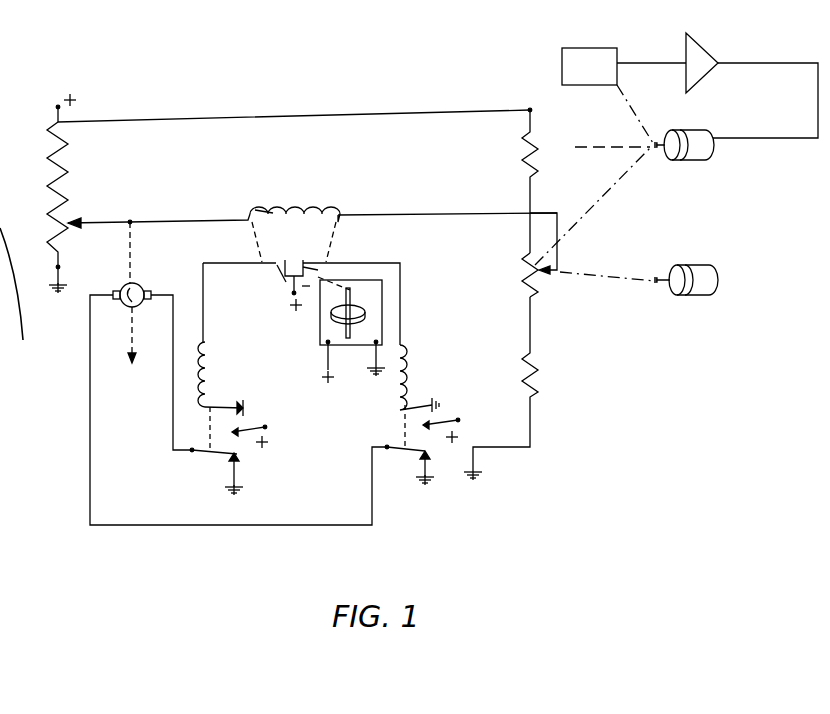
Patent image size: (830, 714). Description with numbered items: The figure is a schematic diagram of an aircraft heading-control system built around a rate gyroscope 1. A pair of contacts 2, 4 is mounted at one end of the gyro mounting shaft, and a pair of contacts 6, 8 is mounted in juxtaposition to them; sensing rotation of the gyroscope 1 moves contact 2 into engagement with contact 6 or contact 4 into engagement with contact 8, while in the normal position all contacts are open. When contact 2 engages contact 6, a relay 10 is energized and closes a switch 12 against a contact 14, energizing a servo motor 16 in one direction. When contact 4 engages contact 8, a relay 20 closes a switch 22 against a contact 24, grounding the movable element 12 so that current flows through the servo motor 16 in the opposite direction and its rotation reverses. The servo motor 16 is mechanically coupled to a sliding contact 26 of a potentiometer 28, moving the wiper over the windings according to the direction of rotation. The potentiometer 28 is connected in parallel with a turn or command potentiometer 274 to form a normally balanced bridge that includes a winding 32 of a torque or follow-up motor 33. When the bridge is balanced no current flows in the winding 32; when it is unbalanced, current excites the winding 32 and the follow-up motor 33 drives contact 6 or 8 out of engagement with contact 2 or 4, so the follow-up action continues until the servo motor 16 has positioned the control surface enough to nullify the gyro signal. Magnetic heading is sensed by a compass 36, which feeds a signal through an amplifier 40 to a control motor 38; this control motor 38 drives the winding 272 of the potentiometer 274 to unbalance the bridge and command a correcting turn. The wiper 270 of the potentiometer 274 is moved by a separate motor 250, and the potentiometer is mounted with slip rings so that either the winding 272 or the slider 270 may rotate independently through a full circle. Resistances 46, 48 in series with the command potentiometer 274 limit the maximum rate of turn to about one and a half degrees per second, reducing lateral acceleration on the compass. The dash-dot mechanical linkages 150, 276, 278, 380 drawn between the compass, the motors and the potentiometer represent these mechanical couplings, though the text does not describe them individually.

The rate gyroscope 1 is at (340, 315).
The contact 2 is at (279, 279).
The contact 4 is at (318, 269).
The contact 6 is at (276, 260).
The contact 8 is at (318, 260).
The relay 10 is at (212, 370).
The switch 12 is at (212, 458).
The contact 14 is at (242, 432).
The servo motor 16 is at (133, 305).
The relay 20 is at (406, 375).
The switch 22 is at (410, 452).
The contact 24 is at (452, 419).
The sliding contact 26 is at (95, 222).
The potentiometer 28 is at (46, 186).
The winding 32 is at (290, 212).
The follow-up motor 33 is at (282, 185).
The compass 36 is at (568, 50).
The control motor 38 is at (688, 155).
The amplifier 40 is at (712, 51).
The resistance 46 is at (522, 156).
The resistance 48 is at (530, 389).
The mechanical linkage 150 is at (640, 112).
The motor 250 is at (670, 293).
The sliding contact 270 is at (560, 267).
The winding 272 is at (528, 283).
The potentiometer 274 is at (520, 270).
The mechanical linkage 276 is at (634, 167).
The mechanical linkage 278 is at (617, 144).
The mechanical linkage 380 is at (606, 278).